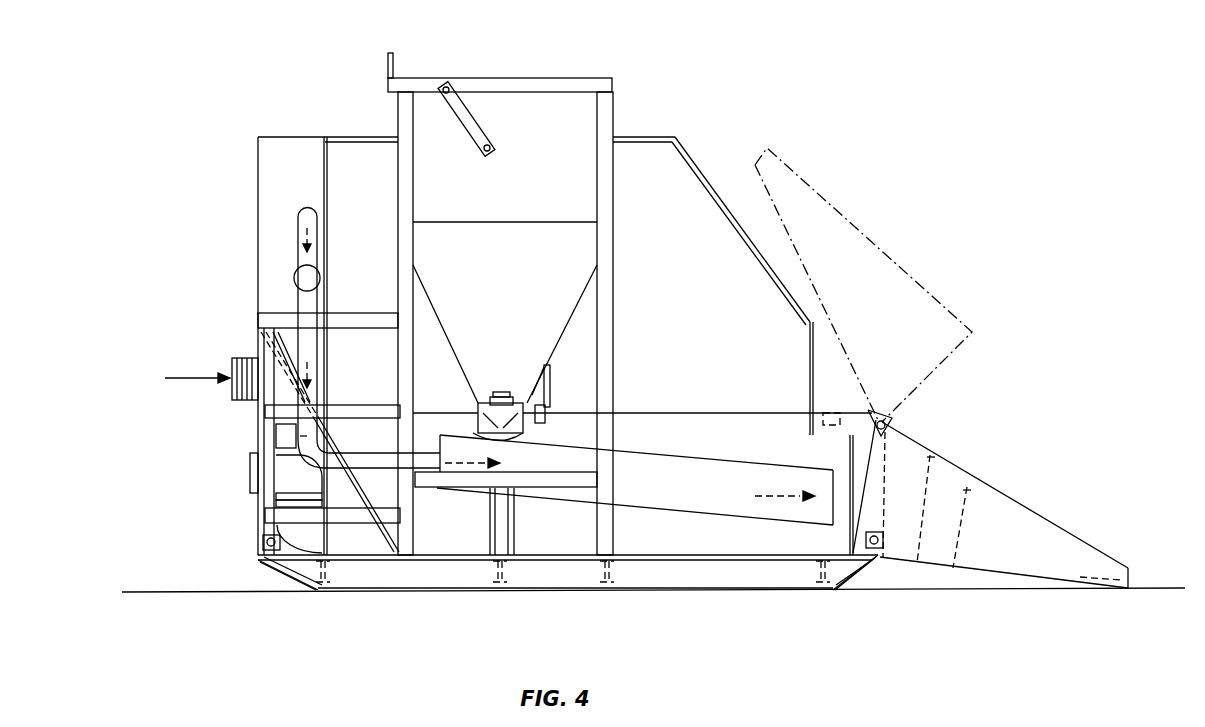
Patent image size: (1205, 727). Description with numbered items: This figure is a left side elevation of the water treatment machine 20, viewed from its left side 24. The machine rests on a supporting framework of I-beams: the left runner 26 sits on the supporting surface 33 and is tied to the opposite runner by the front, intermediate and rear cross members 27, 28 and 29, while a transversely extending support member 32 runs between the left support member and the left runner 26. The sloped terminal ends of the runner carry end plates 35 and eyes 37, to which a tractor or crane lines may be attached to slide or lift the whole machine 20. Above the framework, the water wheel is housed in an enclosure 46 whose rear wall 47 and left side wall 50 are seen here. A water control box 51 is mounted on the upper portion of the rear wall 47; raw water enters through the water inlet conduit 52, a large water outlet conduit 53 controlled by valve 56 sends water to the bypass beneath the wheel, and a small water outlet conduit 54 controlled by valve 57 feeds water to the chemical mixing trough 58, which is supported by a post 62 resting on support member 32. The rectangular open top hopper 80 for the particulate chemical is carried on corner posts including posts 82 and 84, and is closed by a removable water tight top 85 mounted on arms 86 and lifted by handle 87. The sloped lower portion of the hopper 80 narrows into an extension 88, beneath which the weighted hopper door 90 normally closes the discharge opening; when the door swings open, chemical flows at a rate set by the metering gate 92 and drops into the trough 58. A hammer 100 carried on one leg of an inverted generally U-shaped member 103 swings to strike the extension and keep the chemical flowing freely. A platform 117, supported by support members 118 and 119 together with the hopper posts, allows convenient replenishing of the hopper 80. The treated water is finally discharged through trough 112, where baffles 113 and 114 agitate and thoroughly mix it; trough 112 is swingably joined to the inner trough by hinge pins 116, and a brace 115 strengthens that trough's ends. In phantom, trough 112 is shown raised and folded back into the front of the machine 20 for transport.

The water treatment machine 20 is at (855, 185).
The left side 24 is at (684, 327).
The left runner 26 is at (702, 588).
The front cross member 27 is at (816, 590).
The intermediate cross member 28 is at (612, 585).
The rear cross member 29 is at (343, 589).
The transversely extending support member 32 is at (503, 585).
The supporting surface 33 is at (651, 578).
The end plate 35 is at (294, 580).
The eye 37 is at (264, 549).
The enclosure 46 is at (644, 264).
The rear wall 47 is at (328, 183).
The left side wall 50 is at (724, 377).
The water control box 51 is at (270, 192).
The water inlet conduit 52 is at (239, 358).
The large water outlet conduit 53 is at (292, 437).
The small water outlet conduit 54 is at (310, 347).
The valve 56 is at (292, 480).
The valve 57 is at (321, 278).
The chemical mixing trough 58 is at (684, 495).
The post 62 is at (516, 528).
The hopper 80 is at (527, 204).
The post 82 is at (414, 193).
The post 84 is at (614, 181).
The removable water tight top 85 is at (541, 78).
The arms 86 is at (490, 131).
The handle 87 is at (389, 60).
The extension 88 is at (480, 413).
The weighted hopper door 90 is at (516, 438).
The metering gate 92 is at (503, 393).
The hammer 100 is at (546, 416).
The inverted generally U-shaped member 103 is at (549, 368).
The trough 112 is at (900, 246).
The baffle 113 is at (935, 477).
The baffle 114 is at (968, 502).
The brace 115 is at (842, 418).
The hinge pins 116 is at (886, 424).
The platform 117 is at (265, 322).
The support member 118 is at (373, 500).
The support member 119 is at (266, 512).